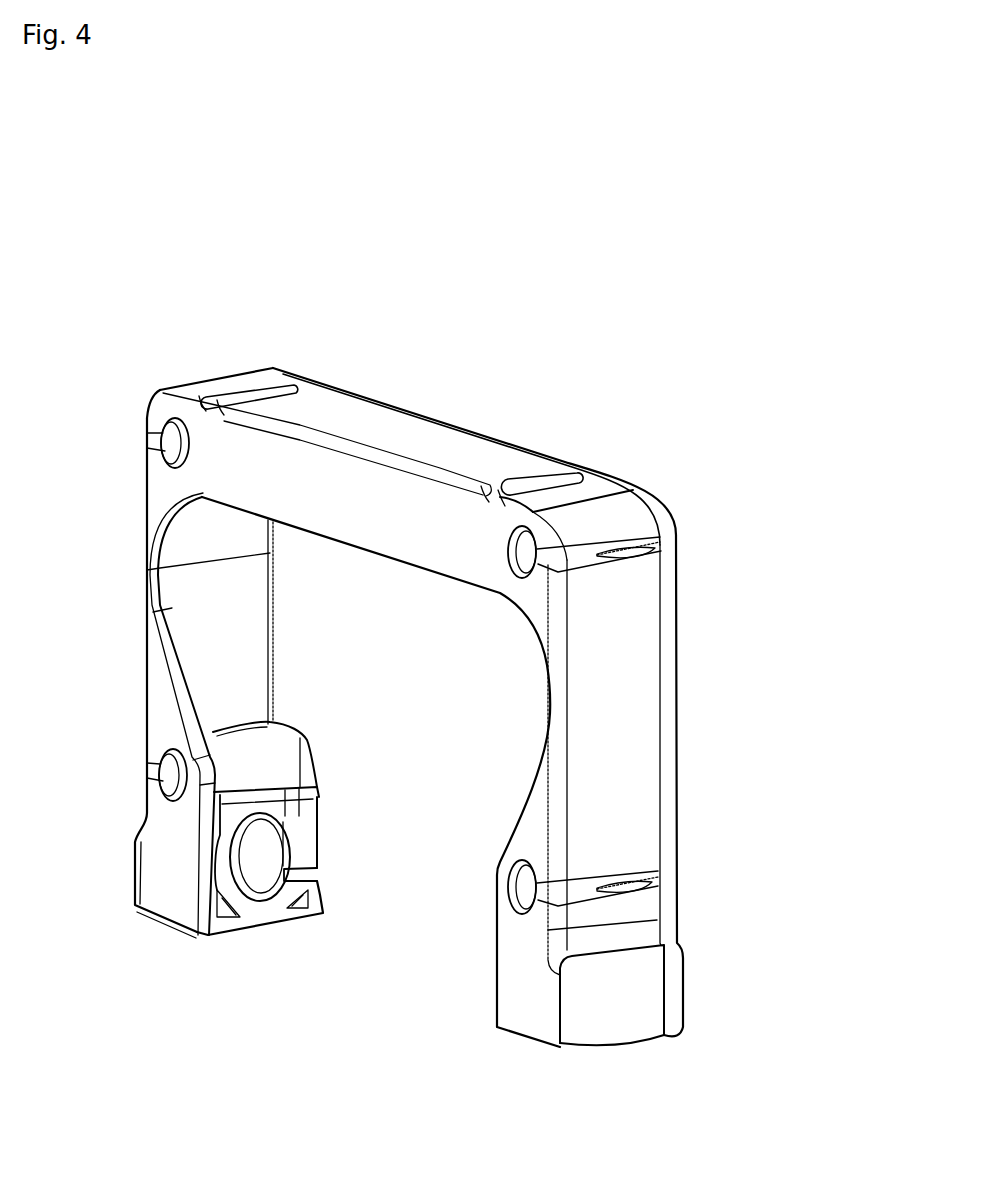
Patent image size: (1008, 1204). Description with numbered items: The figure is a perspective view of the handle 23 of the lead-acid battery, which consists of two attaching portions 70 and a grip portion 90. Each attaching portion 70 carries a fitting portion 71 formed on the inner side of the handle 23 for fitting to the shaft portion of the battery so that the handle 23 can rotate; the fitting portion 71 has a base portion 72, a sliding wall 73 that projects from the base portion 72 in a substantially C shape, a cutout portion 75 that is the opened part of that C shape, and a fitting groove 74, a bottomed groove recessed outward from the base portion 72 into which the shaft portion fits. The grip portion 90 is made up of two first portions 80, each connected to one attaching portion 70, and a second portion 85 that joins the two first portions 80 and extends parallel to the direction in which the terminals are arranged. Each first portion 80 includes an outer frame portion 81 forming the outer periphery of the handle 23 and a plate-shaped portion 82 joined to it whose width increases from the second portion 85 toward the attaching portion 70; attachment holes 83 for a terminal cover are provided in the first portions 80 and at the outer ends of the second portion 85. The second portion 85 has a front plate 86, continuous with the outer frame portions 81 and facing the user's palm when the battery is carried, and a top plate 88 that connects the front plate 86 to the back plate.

The handle 23 is at (627, 313).
The attaching portion 70 is at (196, 934).
The fitting portion 71 is at (290, 935).
The base portion 72 is at (300, 847).
The sliding wall 73 is at (290, 870).
The fitting groove 74 is at (252, 847).
The cutout portion 75 is at (296, 812).
The first portion 80 is at (677, 691).
The outer frame portion 81 is at (270, 668).
The plate-shaped portion 82 is at (522, 793).
The attachment hole 83 is at (147, 437).
The second portion 85 is at (446, 415).
The front plate 86 is at (382, 428).
The top plate 88 is at (447, 518).
The grip portion 90 is at (852, 333).